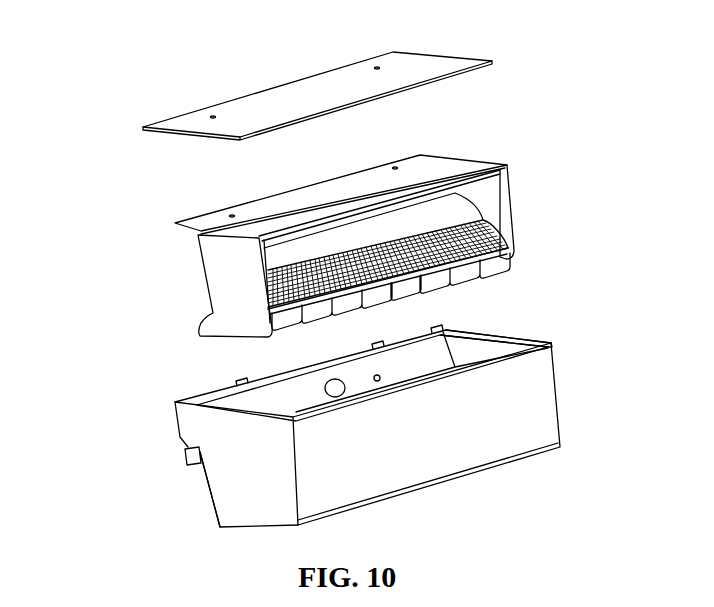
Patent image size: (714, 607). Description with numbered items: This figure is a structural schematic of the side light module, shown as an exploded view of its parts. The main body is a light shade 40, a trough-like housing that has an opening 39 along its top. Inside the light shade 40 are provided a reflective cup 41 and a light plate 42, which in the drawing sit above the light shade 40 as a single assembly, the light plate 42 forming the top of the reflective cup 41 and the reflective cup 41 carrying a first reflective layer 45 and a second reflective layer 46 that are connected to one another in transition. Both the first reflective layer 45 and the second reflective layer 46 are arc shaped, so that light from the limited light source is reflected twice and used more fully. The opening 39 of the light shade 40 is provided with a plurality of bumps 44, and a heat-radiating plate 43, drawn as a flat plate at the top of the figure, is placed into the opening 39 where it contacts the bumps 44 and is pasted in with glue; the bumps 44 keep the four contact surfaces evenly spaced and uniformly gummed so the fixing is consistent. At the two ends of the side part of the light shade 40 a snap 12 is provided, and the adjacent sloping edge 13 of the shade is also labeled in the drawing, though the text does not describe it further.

The heat-radiating plate 43 is at (318, 100).
The light plate 42 is at (205, 227).
The reflective cup 41 is at (225, 293).
The second reflective layer 46 is at (457, 212).
The first reflective layer 45 is at (465, 237).
The opening 39 is at (467, 335).
The bumps 44 is at (503, 333).
The light shade 40 is at (403, 467).
The snap 12 is at (183, 465).
The side edge 13 is at (212, 498).